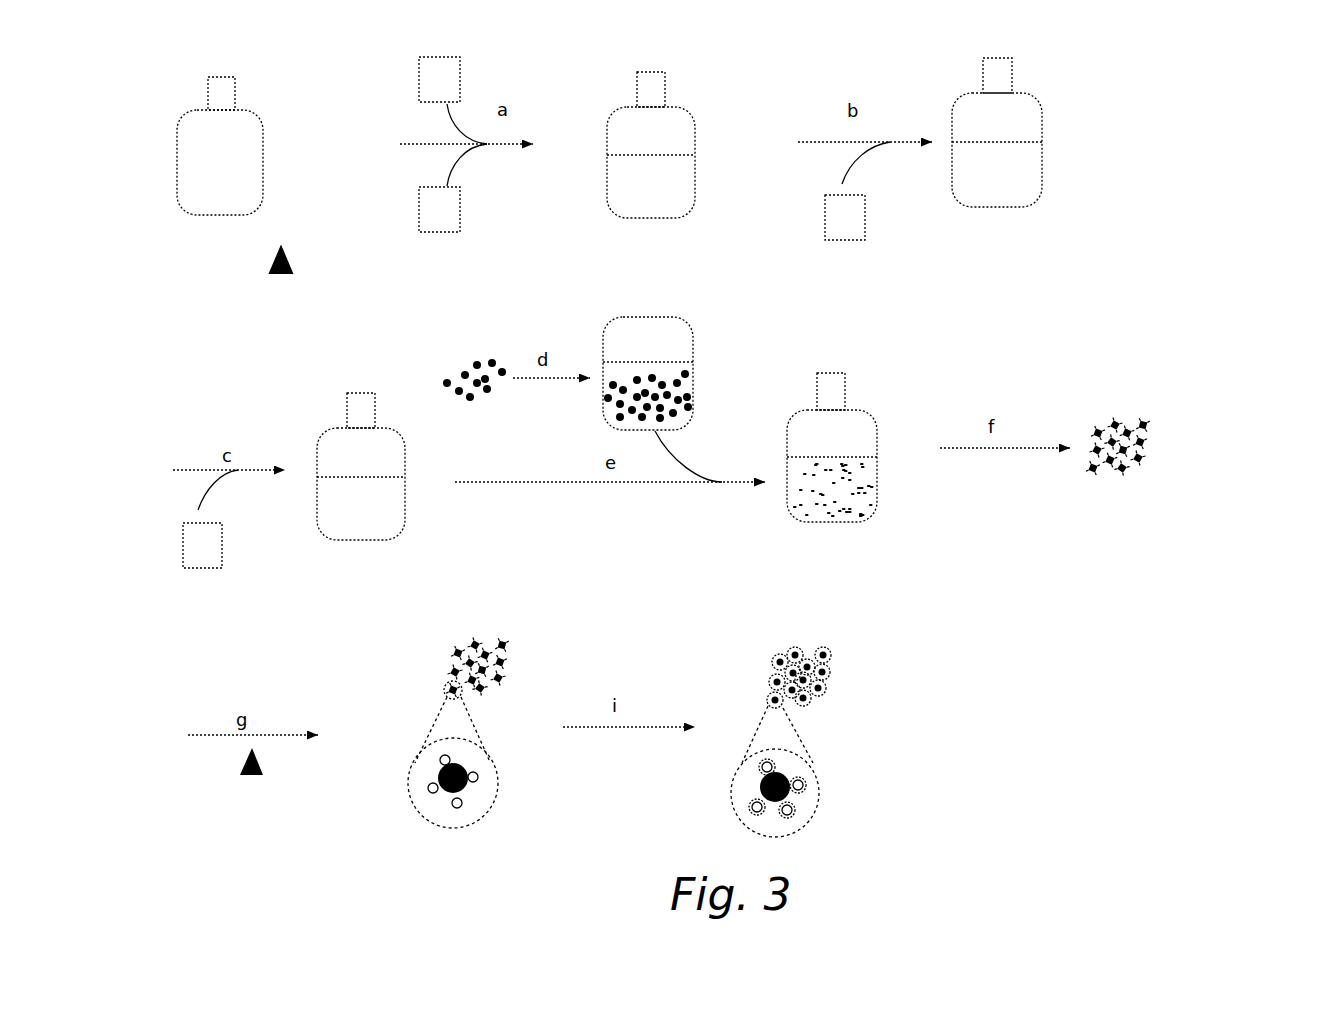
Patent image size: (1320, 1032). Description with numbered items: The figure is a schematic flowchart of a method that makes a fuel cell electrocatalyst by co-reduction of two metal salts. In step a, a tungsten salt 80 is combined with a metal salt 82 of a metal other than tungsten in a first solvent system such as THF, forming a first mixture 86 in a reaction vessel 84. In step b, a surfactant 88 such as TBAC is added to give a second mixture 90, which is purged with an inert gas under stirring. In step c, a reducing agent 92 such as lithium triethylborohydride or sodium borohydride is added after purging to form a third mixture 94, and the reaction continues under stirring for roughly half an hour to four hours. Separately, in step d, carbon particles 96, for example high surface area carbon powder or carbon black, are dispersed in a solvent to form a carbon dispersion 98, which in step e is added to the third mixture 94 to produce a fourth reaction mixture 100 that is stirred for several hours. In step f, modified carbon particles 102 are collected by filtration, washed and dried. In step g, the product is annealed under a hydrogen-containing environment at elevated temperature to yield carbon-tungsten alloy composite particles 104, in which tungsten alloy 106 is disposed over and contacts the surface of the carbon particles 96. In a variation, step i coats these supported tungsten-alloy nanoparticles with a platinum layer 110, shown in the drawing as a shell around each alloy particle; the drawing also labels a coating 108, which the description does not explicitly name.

The tungsten salt 80 is at (439, 209).
The metal salt (MX) 82 is at (439, 79).
The reaction vessel 84 is at (253, 168).
The first mixture 86 is at (665, 188).
The surfactant 88 is at (845, 217).
The second mixture 90 is at (968, 188).
The reducing agent 92 is at (202, 545).
The third mixture 94 is at (333, 522).
The carbon particles 96 is at (482, 360).
The carbon dispersion 98 is at (685, 387).
The fourth reaction mixture 100 is at (860, 480).
The modified carbon particles 102 is at (1160, 437).
The carbon-tungsten alloy composite particles 104 is at (518, 657).
The tungsten alloy 106 is at (478, 776).
The coating shell 108 is at (807, 788).
The platinum layer 110 is at (840, 667).